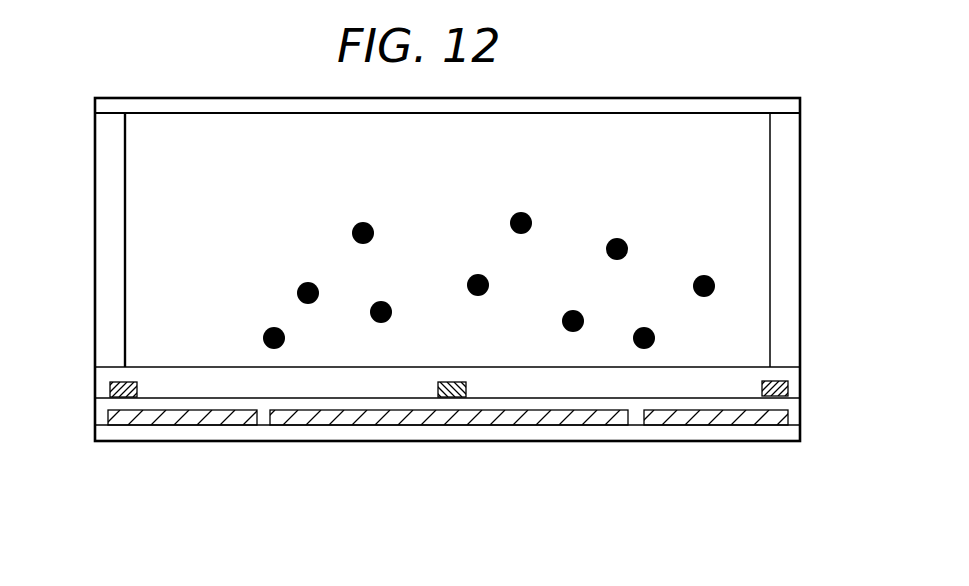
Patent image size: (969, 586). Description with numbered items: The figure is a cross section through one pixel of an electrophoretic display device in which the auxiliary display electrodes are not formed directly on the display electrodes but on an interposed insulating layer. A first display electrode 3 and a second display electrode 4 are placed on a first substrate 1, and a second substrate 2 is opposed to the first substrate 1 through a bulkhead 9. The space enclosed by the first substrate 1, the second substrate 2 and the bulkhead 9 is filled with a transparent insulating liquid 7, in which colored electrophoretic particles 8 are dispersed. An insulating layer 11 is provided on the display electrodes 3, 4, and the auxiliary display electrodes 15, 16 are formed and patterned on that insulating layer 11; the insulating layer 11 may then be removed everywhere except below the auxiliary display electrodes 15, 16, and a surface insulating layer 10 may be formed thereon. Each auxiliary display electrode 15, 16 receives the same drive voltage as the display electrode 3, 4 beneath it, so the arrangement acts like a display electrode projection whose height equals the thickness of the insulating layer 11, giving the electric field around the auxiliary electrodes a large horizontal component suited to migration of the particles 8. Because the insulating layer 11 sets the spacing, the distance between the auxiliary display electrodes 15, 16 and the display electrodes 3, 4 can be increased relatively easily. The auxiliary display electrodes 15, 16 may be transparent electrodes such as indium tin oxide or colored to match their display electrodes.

The first substrate 1 is at (770, 428).
The second substrate 2 is at (736, 104).
The first display electrode 3 is at (181, 420).
The second display electrode 4 is at (355, 420).
The transparent insulating liquid 7 is at (745, 157).
The colored electrophoretic particles 8 is at (713, 277).
The bulkhead 9 is at (786, 223).
The surface insulating layer 10 is at (598, 388).
The insulating layer 11 is at (688, 404).
The auxiliary display electrode 15 is at (110, 390).
The auxiliary display electrode 16 is at (448, 400).